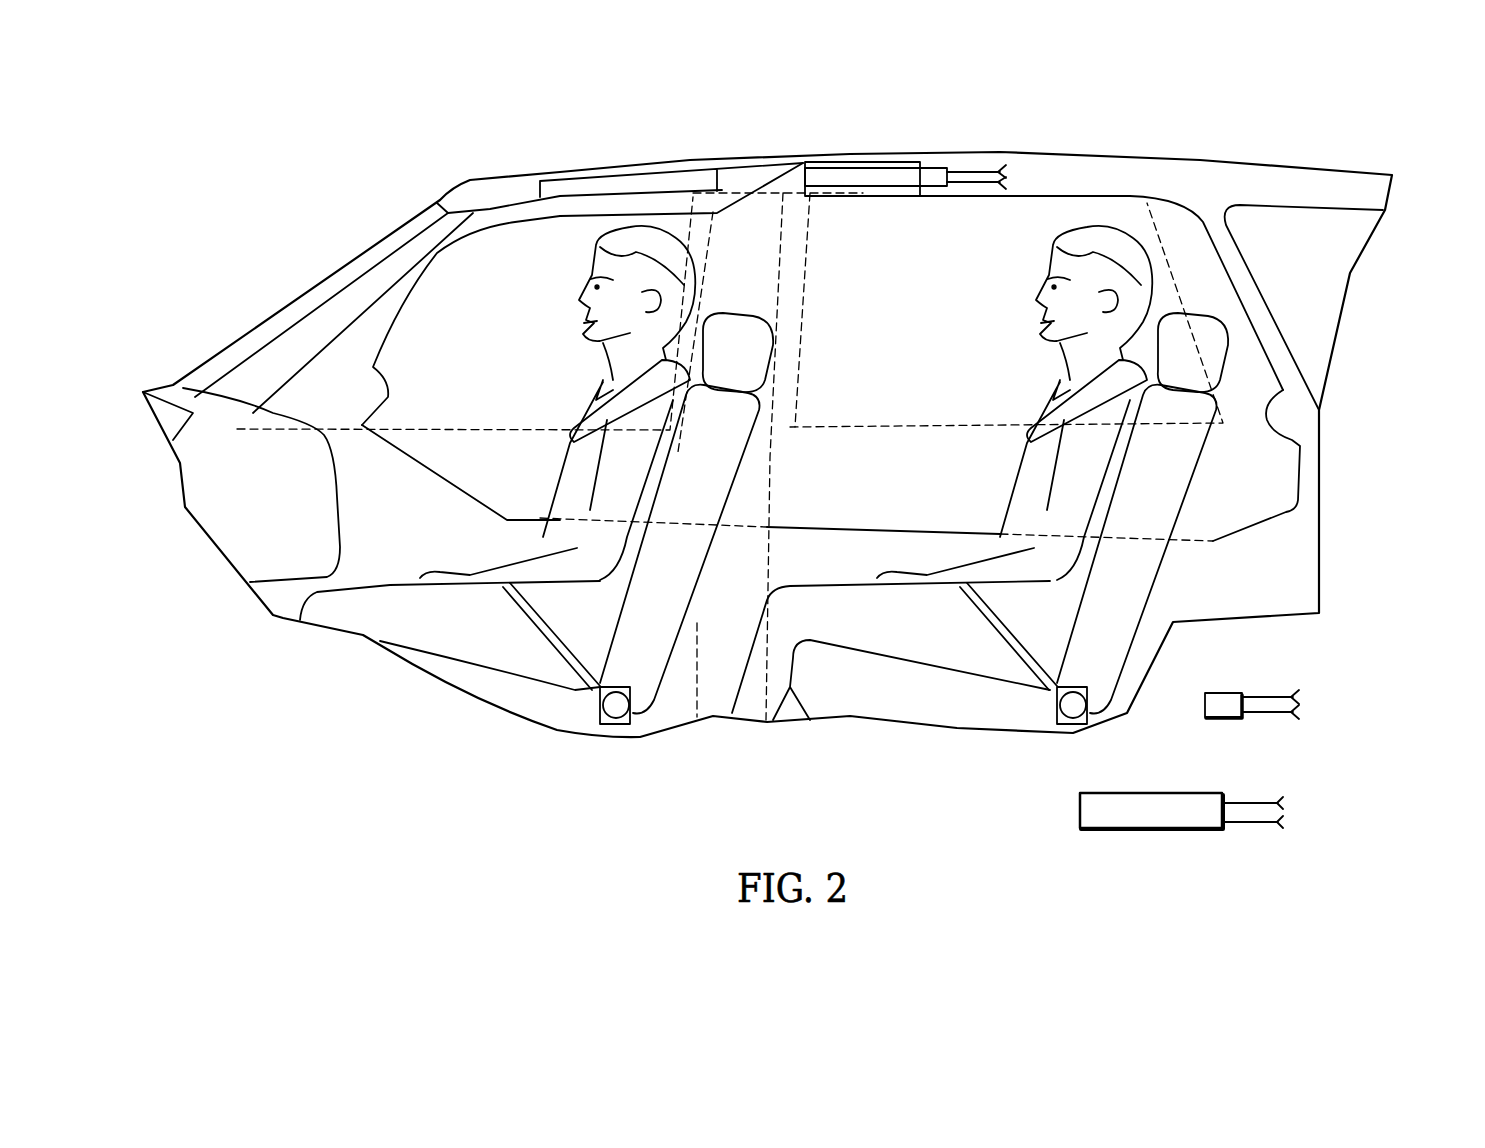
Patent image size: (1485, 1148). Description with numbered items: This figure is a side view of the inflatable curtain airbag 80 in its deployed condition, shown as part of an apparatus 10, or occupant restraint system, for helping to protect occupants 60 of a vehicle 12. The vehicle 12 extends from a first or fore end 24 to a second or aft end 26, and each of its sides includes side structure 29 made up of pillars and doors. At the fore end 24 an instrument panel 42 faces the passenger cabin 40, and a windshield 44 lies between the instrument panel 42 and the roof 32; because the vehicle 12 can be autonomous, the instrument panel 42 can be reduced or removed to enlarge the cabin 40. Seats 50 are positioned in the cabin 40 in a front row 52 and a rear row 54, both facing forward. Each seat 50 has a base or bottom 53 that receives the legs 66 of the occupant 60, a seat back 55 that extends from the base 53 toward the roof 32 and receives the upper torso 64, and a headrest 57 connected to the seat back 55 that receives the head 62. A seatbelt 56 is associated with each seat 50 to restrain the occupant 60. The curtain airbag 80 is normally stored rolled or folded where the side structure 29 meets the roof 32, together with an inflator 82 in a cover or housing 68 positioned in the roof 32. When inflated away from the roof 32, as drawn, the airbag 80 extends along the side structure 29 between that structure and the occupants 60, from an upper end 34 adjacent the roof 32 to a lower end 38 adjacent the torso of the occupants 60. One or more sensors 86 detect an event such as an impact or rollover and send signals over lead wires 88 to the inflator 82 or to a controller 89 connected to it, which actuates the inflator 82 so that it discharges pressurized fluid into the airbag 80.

The apparatus 10 is at (456, 168).
The vehicle 12 is at (323, 258).
The first or fore end 24 is at (160, 350).
The second or aft end 26 is at (1410, 156).
The side structure 29 is at (1253, 330).
The roof 32 is at (1097, 165).
The upper end 34 is at (707, 195).
The lower end 38 is at (948, 552).
The passenger compartment or cabin 40 is at (923, 316).
The instrument panel 42 is at (280, 418).
The windshield or windscreen 44 is at (283, 308).
The seats 50 is at (563, 715).
The front row 52 is at (621, 755).
The base or bottom 53 is at (480, 682).
The rear row 54 is at (1007, 762).
The seat back 55 is at (748, 453).
The seatbelt 56 is at (597, 433).
The headrest 57 is at (753, 333).
The occupant 60 is at (585, 352).
The head 62 is at (655, 233).
The upper torso 64 is at (545, 490).
The legs 66 is at (383, 598).
The cover or housing/module 68 is at (770, 150).
The inflatable curtain airbag 80 is at (570, 197).
The inflator 82 is at (883, 172).
The sensors 86 is at (1222, 692).
The lead wires 88 is at (963, 170).
The controller 89 is at (1157, 832).